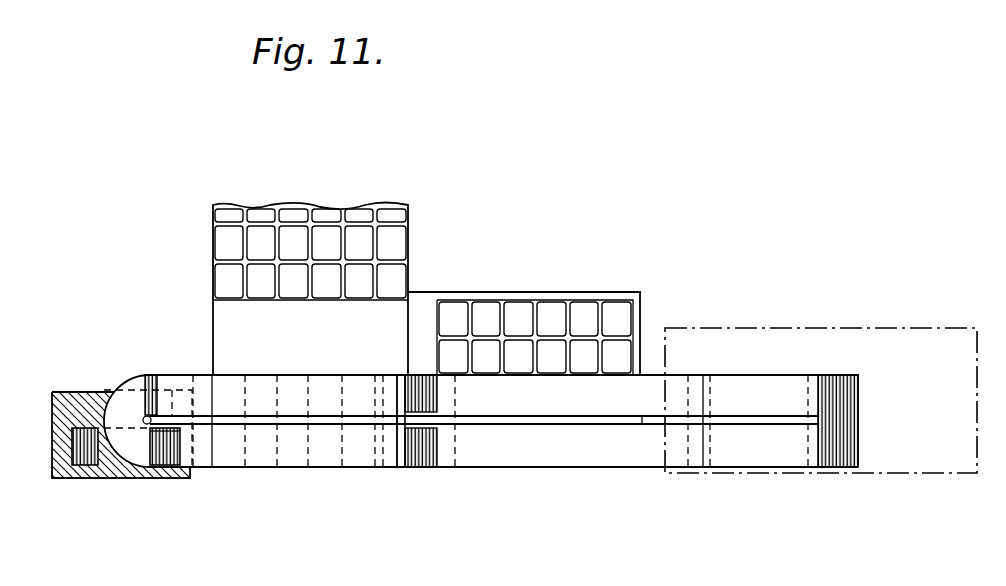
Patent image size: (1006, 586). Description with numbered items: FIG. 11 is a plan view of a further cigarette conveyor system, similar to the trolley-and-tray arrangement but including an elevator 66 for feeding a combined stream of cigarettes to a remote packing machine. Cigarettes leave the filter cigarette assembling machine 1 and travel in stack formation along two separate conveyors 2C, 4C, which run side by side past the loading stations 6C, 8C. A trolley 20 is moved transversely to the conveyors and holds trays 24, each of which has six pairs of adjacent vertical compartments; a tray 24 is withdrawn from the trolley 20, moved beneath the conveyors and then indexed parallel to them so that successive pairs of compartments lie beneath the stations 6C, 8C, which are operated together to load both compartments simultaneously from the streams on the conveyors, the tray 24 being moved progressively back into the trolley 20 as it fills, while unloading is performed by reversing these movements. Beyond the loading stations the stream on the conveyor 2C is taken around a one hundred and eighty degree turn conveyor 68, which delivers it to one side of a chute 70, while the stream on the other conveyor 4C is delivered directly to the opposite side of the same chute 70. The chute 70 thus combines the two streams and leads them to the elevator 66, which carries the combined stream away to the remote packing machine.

The filter cigarette assembling machine 1 is at (919, 415).
The trolley 20 is at (409, 229).
The tray 24 is at (626, 310).
The conveyor 2C is at (582, 412).
The conveyor 4C is at (616, 462).
The loading station 6C is at (441, 398).
The loading station 8C is at (398, 465).
The elevator 66 is at (91, 470).
The 180° turn conveyor 68 is at (134, 405).
The chute 70 is at (188, 453).